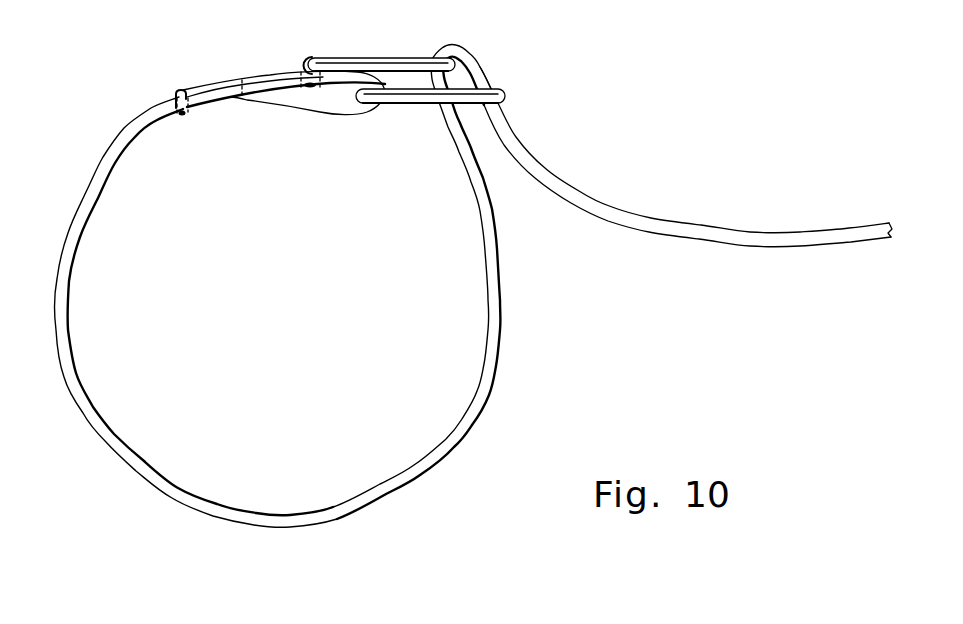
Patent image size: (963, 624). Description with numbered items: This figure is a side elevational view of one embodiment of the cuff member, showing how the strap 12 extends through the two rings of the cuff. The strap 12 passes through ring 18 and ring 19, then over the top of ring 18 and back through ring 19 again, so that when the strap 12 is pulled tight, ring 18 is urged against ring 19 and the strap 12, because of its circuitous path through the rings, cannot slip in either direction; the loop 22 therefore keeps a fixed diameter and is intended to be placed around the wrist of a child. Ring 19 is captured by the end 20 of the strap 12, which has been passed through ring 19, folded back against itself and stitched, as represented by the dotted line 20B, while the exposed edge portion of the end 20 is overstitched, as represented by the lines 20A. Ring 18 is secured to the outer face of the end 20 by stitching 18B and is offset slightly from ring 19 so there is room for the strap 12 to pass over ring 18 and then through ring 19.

The strap 12 is at (621, 209).
The ring 18 is at (405, 57).
The stitching 18B is at (308, 59).
The ring 19 is at (505, 94).
The end of strap 20 is at (277, 57).
The overstitching lines 20A is at (173, 92).
The dotted line of stitching 20B is at (242, 97).
The loop 22 is at (487, 420).